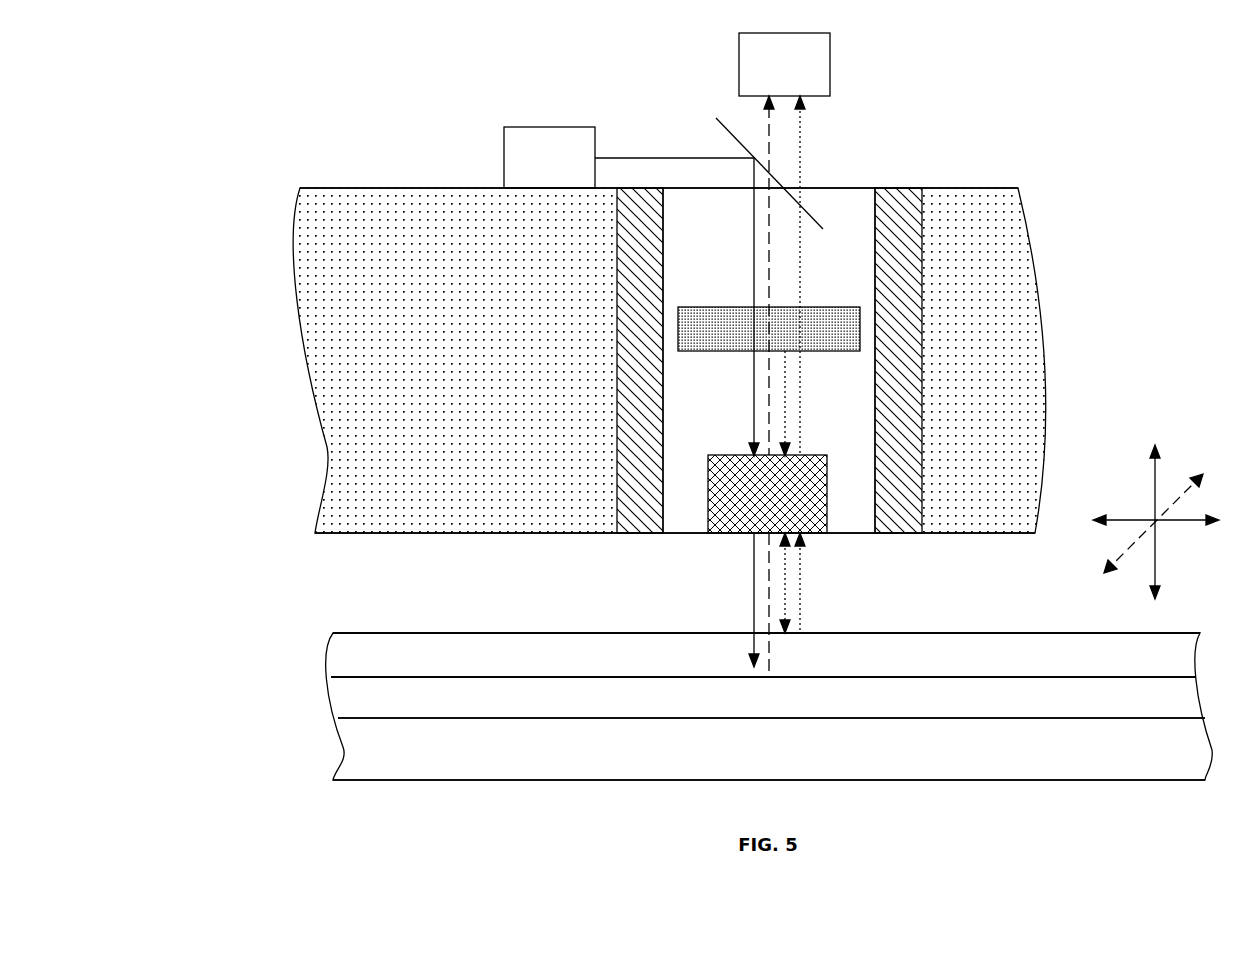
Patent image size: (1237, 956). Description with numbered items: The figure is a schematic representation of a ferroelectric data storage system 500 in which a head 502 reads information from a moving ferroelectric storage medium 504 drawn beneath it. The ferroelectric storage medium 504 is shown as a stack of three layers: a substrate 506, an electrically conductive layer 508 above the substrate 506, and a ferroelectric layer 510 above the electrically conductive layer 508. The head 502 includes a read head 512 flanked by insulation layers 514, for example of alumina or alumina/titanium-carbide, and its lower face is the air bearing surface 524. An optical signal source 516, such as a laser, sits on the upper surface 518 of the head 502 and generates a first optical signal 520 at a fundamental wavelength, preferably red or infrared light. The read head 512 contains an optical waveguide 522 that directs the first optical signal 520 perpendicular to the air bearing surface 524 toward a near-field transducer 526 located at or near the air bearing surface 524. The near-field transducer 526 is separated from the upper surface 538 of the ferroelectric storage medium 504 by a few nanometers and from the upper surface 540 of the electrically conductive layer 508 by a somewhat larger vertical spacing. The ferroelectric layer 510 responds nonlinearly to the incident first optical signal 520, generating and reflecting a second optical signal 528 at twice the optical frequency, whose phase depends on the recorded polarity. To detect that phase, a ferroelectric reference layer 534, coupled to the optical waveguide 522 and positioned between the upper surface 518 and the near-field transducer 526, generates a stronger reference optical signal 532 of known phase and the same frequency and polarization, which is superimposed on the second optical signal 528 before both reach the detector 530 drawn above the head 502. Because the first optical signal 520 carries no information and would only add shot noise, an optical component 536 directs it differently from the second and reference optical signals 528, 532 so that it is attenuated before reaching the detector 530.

The ferroelectric data storage system 500 is at (258, 78).
The head 502 is at (250, 202).
The ferroelectric storage medium 504 is at (290, 648).
The substrate 506 is at (993, 760).
The electrically conductive layer 508 is at (993, 707).
The ferroelectric layer 510 is at (993, 665).
The read head 512 is at (908, 200).
The insulation layers 514 is at (378, 505).
The optical signal source 516 is at (535, 172).
The upper surface of the head 518 is at (428, 178).
The first optical signal 520 is at (629, 158).
The optical waveguide 522 is at (852, 205).
The air bearing surface 524 is at (968, 546).
The near-field transducer 526 is at (750, 505).
The second optical signal 528 is at (768, 272).
The detector 530 is at (769, 75).
The reference optical signal 532 is at (805, 250).
The ferroelectric reference layer 534 is at (847, 328).
The optical component 536 is at (710, 106).
The upper surface of the ferroelectric storage medium 538 is at (515, 622).
The upper surface of the electrically conductive layer 540 is at (358, 660).